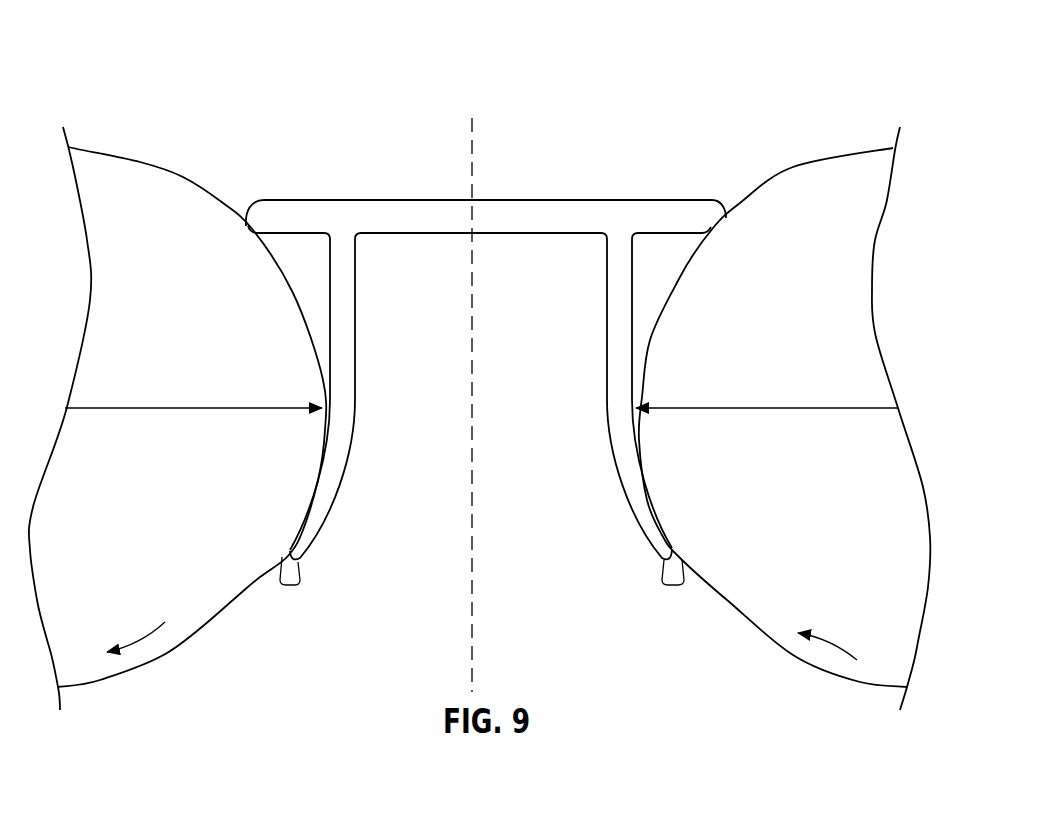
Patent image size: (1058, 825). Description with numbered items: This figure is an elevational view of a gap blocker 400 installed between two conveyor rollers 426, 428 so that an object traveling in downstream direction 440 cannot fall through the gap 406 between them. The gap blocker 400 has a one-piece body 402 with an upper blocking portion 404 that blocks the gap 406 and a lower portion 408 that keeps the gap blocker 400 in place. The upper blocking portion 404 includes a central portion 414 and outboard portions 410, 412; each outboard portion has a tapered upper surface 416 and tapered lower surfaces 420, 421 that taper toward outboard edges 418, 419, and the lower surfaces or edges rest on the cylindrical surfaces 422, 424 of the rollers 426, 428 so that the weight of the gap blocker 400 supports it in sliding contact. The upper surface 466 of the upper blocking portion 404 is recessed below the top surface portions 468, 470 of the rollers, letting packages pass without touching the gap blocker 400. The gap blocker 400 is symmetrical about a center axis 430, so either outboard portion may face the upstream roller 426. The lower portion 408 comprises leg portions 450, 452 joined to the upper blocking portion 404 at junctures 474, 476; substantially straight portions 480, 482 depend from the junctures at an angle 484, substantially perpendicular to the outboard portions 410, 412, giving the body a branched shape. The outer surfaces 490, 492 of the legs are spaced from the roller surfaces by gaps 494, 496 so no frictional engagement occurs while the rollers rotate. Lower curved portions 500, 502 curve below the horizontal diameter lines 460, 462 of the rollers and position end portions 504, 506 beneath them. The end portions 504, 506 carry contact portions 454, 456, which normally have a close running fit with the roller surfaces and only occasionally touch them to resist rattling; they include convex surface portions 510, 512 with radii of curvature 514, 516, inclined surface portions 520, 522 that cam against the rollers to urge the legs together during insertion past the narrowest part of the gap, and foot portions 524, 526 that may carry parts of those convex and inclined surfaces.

The gap blocker 400 is at (504, 136).
The body 402 is at (617, 200).
The upper blocking portion 404 is at (390, 200).
The gap 406 is at (343, 160).
The lower portion 408 is at (418, 575).
The outboard portion 410 is at (289, 186).
The outboard portion 412 is at (738, 188).
The central portion 414 is at (497, 230).
The tapered upper surface 416 is at (713, 200).
The outboard edge 418 is at (737, 207).
The outboard edge 419 is at (237, 210).
The tapered lower surface 420 is at (710, 237).
The tapered lower surface 421 is at (250, 227).
The cylindrical surface 422 is at (187, 173).
The cylindrical surface 424 is at (795, 167).
The roller 426 is at (125, 172).
The roller 428 is at (855, 167).
The center axis 430 is at (467, 132).
The direction 440 is at (262, 72).
The leg portion 450 is at (347, 430).
The leg portion 452 is at (617, 408).
The contact portion 454 is at (283, 548).
The contact portion 456 is at (688, 547).
The diameter line 460 is at (122, 410).
The diameter line 462 is at (770, 408).
The upper surface 466 is at (568, 197).
The top surface portion 468 is at (73, 143).
The top surface portion 470 is at (893, 143).
The juncture 474 is at (345, 238).
The juncture 476 is at (603, 237).
The straight portion 480 is at (350, 330).
The straight portion 482 is at (613, 307).
The angle 484 is at (324, 262).
The outer surface 490 is at (333, 357).
The outer surface 492 is at (630, 343).
The gap 494 is at (317, 330).
The gap 496 is at (657, 280).
The lower curved portion 500 is at (337, 488).
The lower curved portion 502 is at (637, 488).
The end portion 504 is at (359, 511).
The end portion 506 is at (619, 534).
The convex surface portion 510 is at (310, 540).
The convex surface portion 512 is at (652, 527).
The radius of curvature 514 is at (292, 565).
The radius of curvature 516 is at (670, 561).
The inclined surface portion 520 is at (280, 573).
The inclined surface portion 522 is at (687, 572).
The foot portion 524 is at (297, 577).
The foot portion 526 is at (673, 585).